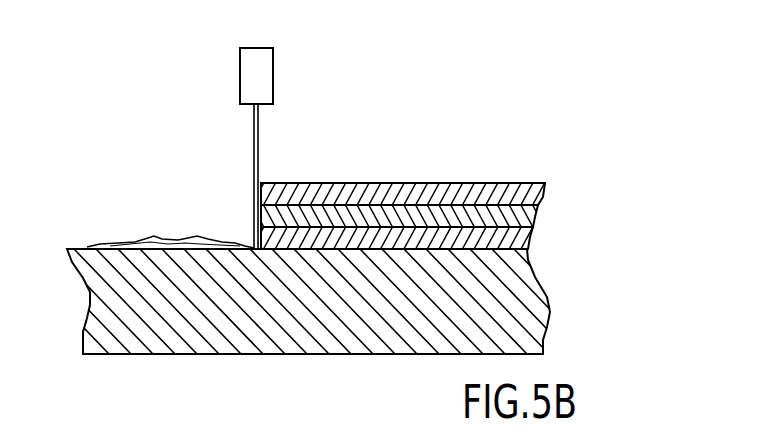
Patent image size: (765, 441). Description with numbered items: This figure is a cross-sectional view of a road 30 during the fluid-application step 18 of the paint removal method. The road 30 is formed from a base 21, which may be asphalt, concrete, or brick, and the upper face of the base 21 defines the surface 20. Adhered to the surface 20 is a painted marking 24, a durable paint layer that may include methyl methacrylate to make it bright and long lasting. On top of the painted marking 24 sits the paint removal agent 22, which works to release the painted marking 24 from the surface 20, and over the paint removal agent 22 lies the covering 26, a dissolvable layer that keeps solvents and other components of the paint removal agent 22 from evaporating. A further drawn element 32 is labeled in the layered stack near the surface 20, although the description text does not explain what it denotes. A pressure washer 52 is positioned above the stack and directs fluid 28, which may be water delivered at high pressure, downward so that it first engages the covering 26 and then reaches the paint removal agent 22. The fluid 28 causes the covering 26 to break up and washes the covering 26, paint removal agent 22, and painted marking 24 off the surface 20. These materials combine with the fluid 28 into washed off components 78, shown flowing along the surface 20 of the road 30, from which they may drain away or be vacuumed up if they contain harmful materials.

The step 18 is at (362, 88).
The surface 20 is at (398, 183).
The base 21 is at (512, 315).
The paint removal agent 22 is at (397, 217).
The painted marking 24 is at (428, 240).
The covering 26 is at (337, 195).
The fluid 28 is at (254, 168).
The road 30 is at (574, 148).
The interface layer 32 is at (522, 237).
The pressure washer 52 is at (245, 82).
The washed off components 78 is at (150, 238).